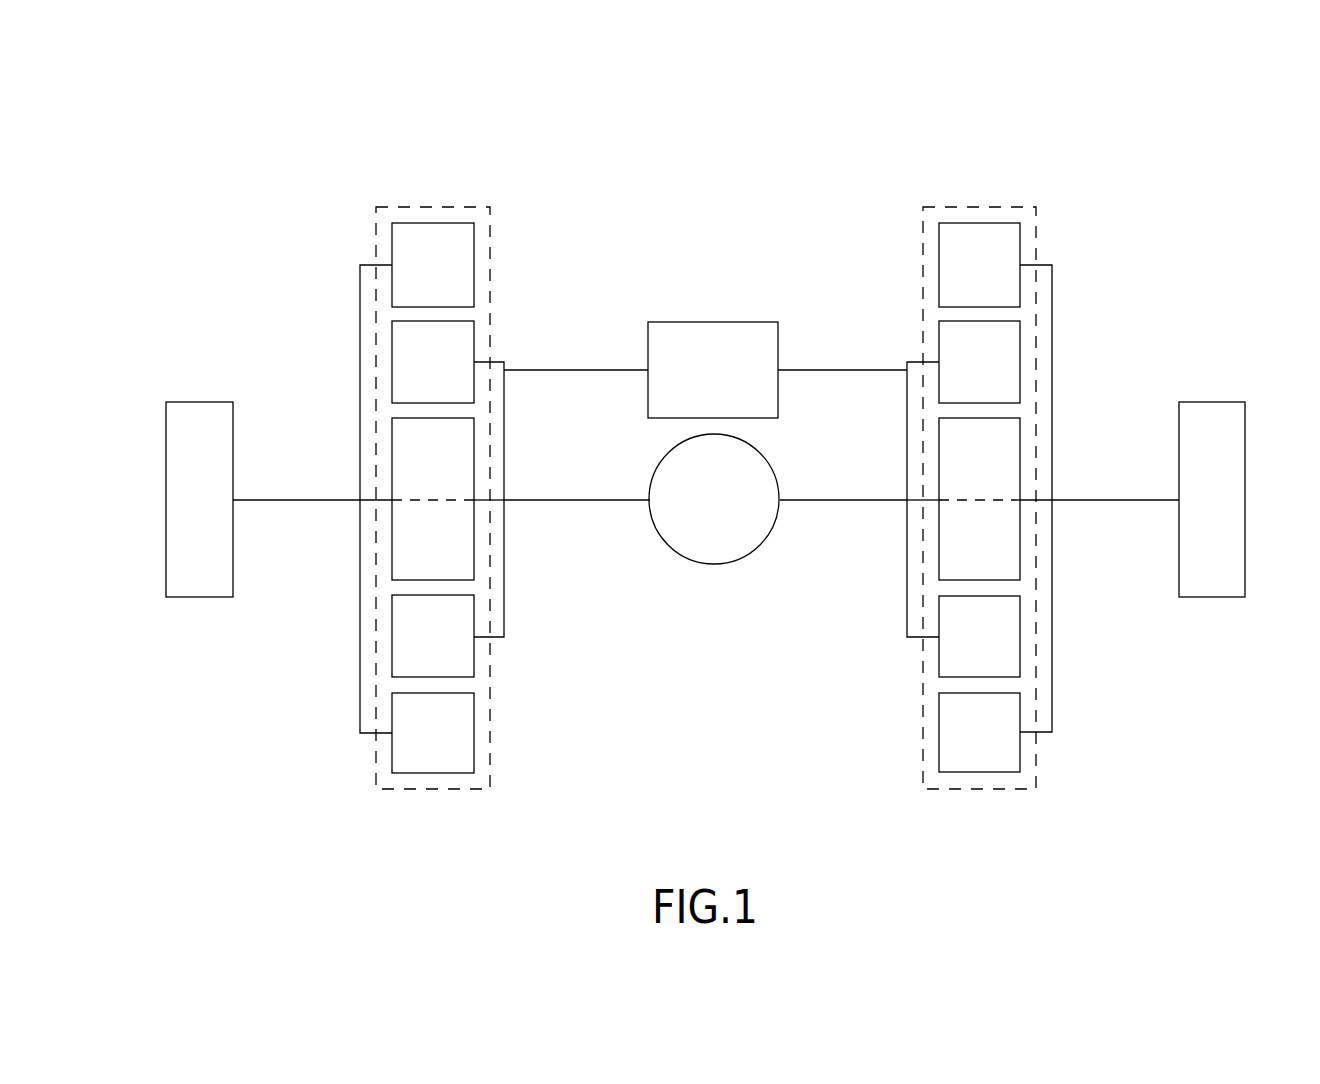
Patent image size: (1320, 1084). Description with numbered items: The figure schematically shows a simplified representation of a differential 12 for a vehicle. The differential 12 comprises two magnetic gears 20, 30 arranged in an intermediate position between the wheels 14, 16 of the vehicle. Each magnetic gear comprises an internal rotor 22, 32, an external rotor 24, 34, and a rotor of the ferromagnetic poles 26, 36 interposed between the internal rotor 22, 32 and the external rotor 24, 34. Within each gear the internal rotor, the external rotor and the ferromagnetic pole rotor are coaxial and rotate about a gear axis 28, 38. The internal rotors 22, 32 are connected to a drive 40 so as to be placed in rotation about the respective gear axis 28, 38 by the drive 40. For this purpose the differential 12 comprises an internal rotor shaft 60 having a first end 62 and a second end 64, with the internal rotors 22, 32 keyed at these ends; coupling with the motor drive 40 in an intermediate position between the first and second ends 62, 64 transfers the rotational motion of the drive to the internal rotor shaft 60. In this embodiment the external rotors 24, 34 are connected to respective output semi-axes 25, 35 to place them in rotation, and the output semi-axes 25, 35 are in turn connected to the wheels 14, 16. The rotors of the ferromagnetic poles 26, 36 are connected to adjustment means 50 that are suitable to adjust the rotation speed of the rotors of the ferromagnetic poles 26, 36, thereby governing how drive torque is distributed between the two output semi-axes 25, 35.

The differential 12 is at (979, 429).
The wheel 14 is at (183, 601).
The wheel 16 is at (1224, 399).
The magnetic gear 20 is at (412, 205).
The internal rotor 22 is at (476, 546).
The external rotor 24 is at (476, 272).
The output semi-axis 25 is at (300, 500).
The rotor of the ferromagnetic poles 26 is at (390, 344).
The gear axis 28 is at (392, 580).
The magnetic gear 30 is at (1012, 206).
The internal rotor 32 is at (938, 545).
The external rotor 34 is at (937, 242).
The output semi-axis 35 is at (1135, 502).
The rotor of the ferromagnetic poles 36 is at (1022, 360).
The gear axis 38 is at (1020, 503).
The drive 40 is at (698, 511).
The adjustment means 50 is at (737, 320).
The internal rotor shaft 60 is at (620, 502).
The first end 62 is at (478, 496).
The second end 64 is at (938, 496).